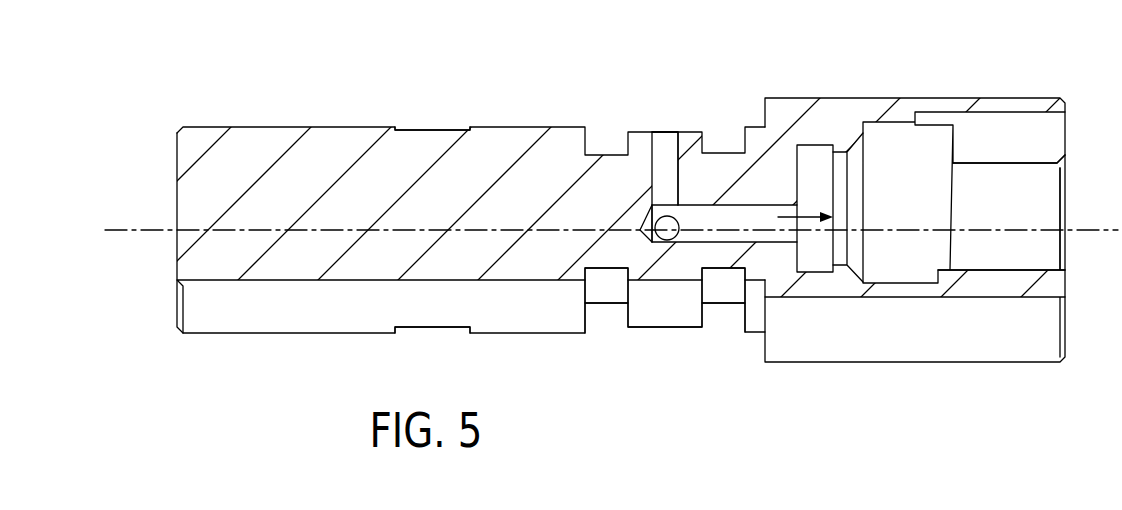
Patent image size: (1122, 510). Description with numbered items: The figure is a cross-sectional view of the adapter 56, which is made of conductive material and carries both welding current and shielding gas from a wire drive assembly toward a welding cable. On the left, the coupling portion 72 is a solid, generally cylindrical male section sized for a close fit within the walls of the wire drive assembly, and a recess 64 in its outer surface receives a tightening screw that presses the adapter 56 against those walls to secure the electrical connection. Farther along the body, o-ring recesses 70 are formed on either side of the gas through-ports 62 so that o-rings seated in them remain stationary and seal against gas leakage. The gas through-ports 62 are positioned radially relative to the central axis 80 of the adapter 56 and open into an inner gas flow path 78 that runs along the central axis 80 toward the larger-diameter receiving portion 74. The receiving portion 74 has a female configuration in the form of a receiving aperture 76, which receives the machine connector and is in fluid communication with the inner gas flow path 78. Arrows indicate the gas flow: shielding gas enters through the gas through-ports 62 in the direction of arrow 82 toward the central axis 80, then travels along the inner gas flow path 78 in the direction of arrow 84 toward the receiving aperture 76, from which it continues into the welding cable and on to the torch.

The adapter 56 is at (590, 224).
The gas through-ports 62 is at (667, 188).
The recess 64 is at (437, 131).
The o-ring recesses 70 is at (597, 288).
The coupling portion 72 is at (268, 127).
The receiving portion 74 is at (911, 363).
The receiving aperture 76 is at (1006, 160).
The inner gas flow path 78 is at (753, 218).
The central axis 80 is at (146, 232).
The arrow 82 is at (670, 148).
The arrow 84 is at (808, 217).